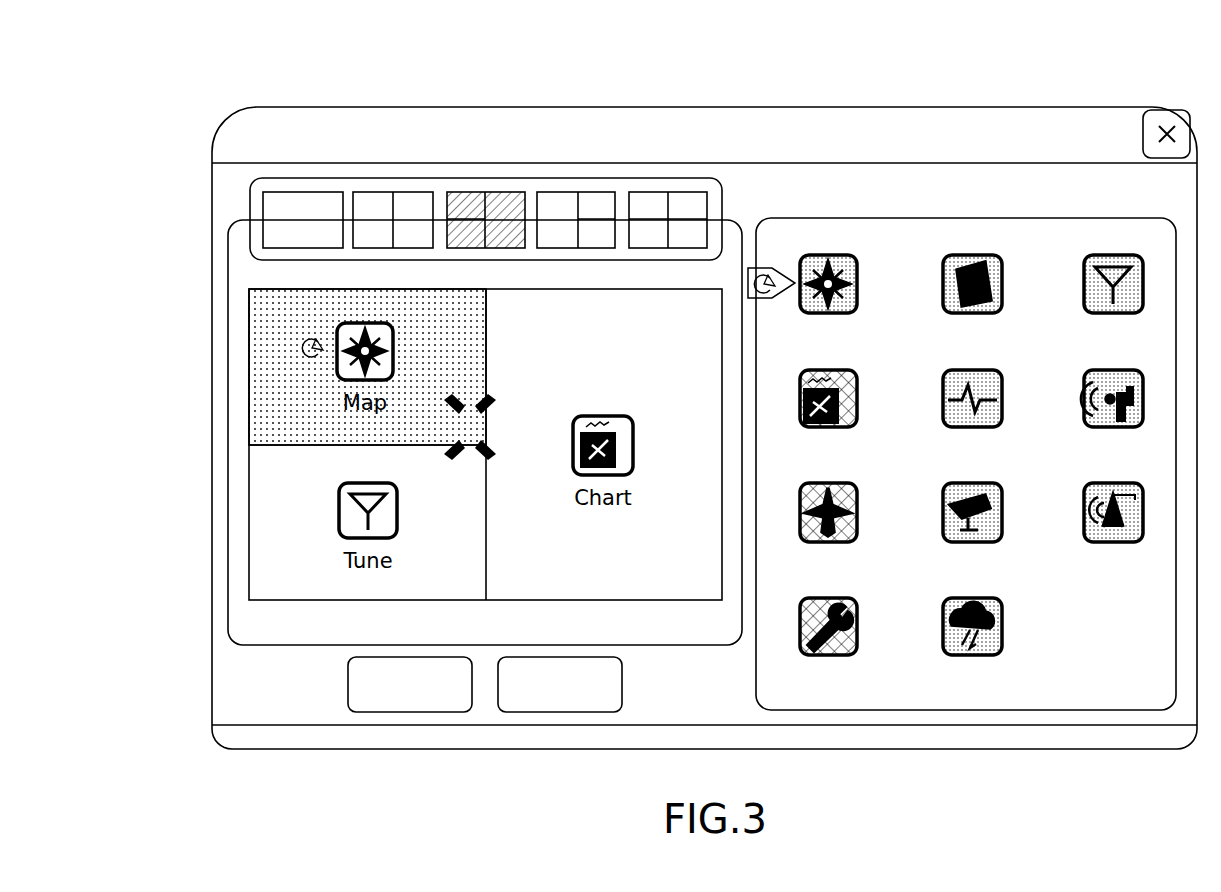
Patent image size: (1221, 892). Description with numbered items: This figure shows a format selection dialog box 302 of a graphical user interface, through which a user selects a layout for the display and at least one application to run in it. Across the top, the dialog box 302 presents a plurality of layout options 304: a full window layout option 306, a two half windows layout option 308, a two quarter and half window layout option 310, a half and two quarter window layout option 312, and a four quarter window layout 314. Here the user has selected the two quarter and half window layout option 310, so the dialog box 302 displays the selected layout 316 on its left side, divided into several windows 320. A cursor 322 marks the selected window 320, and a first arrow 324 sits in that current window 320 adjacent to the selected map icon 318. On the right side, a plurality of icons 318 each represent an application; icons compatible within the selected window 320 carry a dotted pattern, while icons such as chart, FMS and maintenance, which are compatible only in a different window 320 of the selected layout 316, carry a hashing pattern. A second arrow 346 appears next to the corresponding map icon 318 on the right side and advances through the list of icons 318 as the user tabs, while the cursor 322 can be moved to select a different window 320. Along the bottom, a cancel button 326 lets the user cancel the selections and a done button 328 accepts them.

The format selection dialog box 302 is at (1082, 107).
The layout options 304 is at (248, 209).
The full window layout option 306 is at (280, 192).
The two half windows layout option 308 is at (373, 192).
The two quarter and half window layout option 310 is at (462, 192).
The half and two quarter window layout option 312 is at (553, 192).
The four quarter window layout 314 is at (645, 192).
The selected layout 316 is at (635, 600).
The icons 318 is at (972, 255).
The window 320 is at (338, 600).
The cursor 322 is at (490, 400).
The first arrow 324 is at (306, 340).
The cancel button 326 is at (410, 712).
The done button 328 is at (562, 712).
The second arrow 346 is at (762, 268).